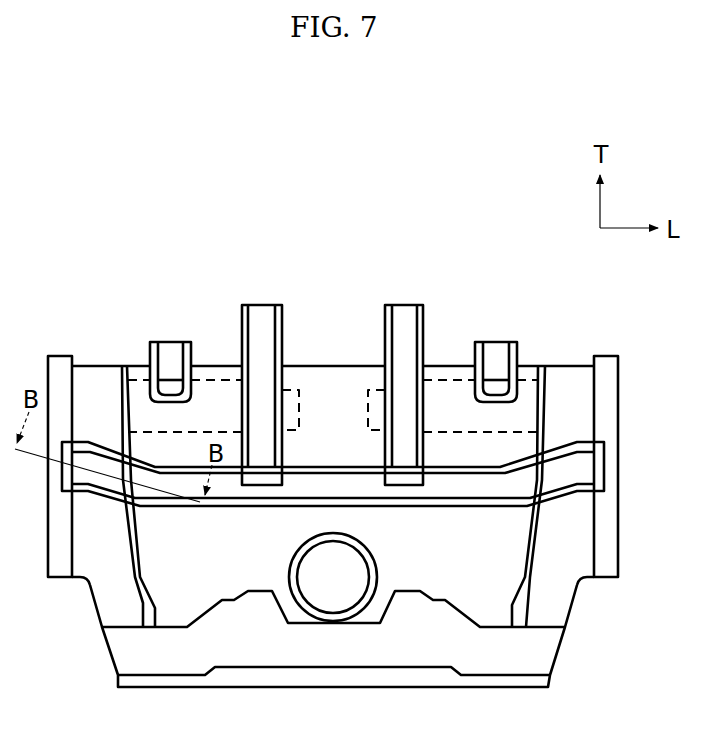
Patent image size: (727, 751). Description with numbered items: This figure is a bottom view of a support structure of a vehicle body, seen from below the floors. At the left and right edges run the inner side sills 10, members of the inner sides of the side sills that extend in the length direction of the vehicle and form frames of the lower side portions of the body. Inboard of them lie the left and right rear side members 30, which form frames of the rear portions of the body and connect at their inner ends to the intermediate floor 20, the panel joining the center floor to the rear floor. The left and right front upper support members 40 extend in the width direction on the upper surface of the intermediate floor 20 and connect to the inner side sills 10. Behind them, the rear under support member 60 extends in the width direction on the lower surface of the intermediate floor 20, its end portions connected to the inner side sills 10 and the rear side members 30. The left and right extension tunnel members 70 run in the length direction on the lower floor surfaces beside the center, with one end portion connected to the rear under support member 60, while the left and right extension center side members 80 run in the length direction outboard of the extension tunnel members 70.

The inner side sill 10 is at (60, 355).
The intermediate floor 20 is at (333, 378).
The rear side member 30 is at (104, 380).
The front upper support member 40 is at (211, 385).
The rear under support member 60 is at (585, 463).
The extension tunnel member 70 is at (258, 305).
The extension center side member 80 is at (168, 345).